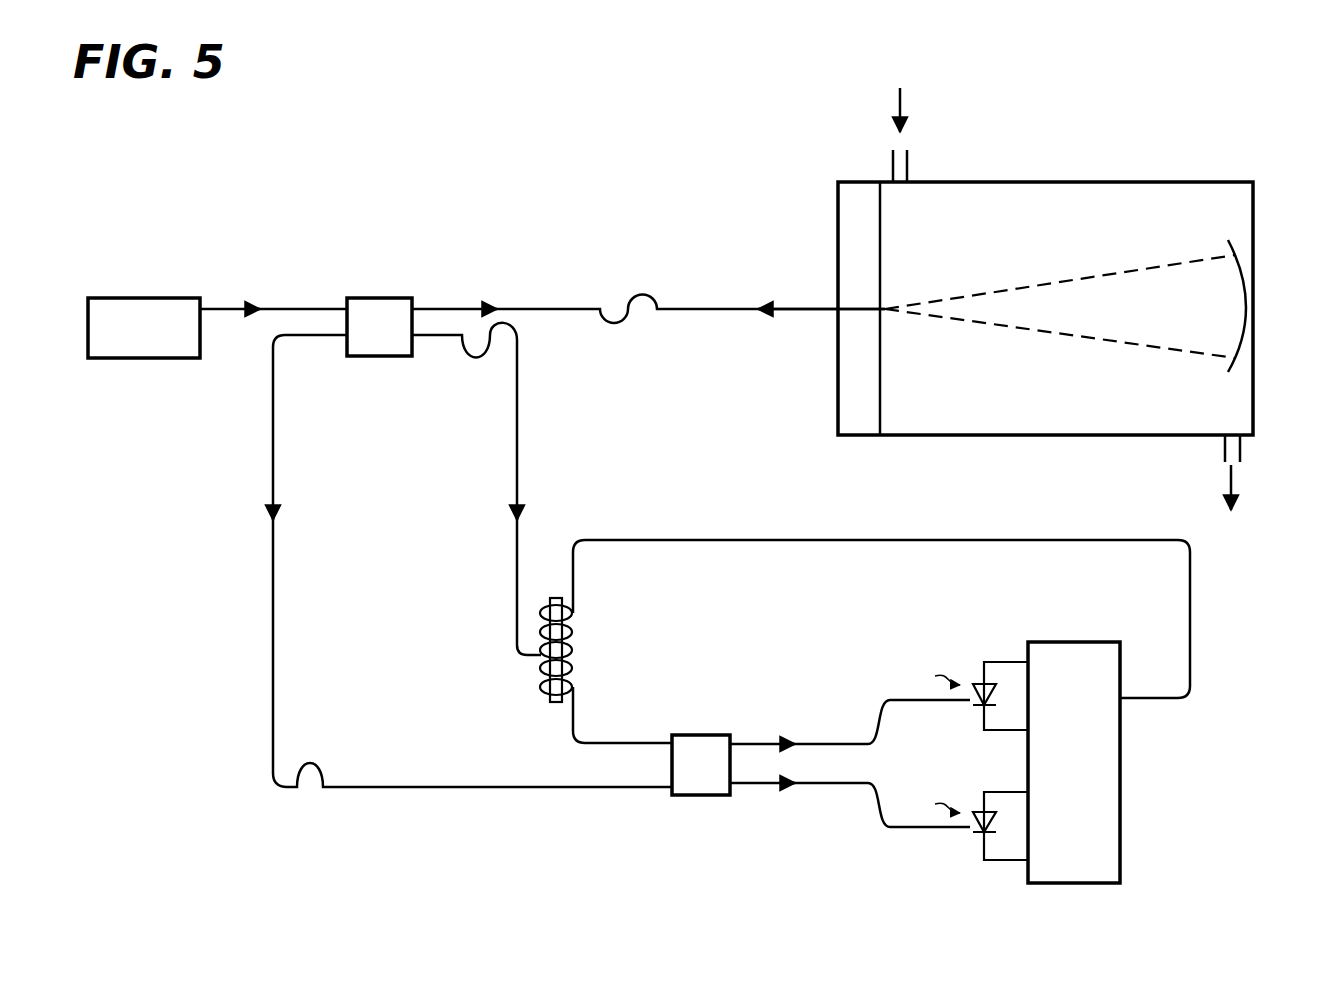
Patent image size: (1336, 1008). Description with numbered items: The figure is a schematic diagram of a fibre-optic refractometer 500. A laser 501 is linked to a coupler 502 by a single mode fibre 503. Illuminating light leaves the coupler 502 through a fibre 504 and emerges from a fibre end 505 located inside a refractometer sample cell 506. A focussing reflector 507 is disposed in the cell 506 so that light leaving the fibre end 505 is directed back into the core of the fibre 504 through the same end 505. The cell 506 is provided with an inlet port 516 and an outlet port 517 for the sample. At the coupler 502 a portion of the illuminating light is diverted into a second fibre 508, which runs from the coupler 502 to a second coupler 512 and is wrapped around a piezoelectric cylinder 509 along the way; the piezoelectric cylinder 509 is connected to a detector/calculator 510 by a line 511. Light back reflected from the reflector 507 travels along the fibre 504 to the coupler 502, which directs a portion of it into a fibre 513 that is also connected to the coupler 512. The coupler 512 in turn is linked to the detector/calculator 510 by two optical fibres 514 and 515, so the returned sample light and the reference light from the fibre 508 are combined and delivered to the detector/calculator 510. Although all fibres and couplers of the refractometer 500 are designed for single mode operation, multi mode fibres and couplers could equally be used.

The refractometer 500 is at (345, 195).
The laser 501 is at (138, 316).
The coupler 502 is at (388, 312).
The single mode fibre 503 is at (240, 305).
The fibre 504 is at (540, 306).
The fibre end 505 is at (886, 307).
The refractometer sample cell 506 is at (1076, 180).
The focussing reflector 507 is at (1232, 372).
The fibre 508 is at (515, 498).
The piezoelectric cylinder 509 is at (575, 652).
The detector/calculator 510 is at (1070, 652).
The line 511 is at (835, 542).
The coupler 512 is at (697, 755).
The fibre 513 is at (280, 682).
The optical fibre 514 is at (765, 738).
The optical fibre 515 is at (758, 790).
The inlet port 516 is at (895, 112).
The outlet port 517 is at (1234, 486).